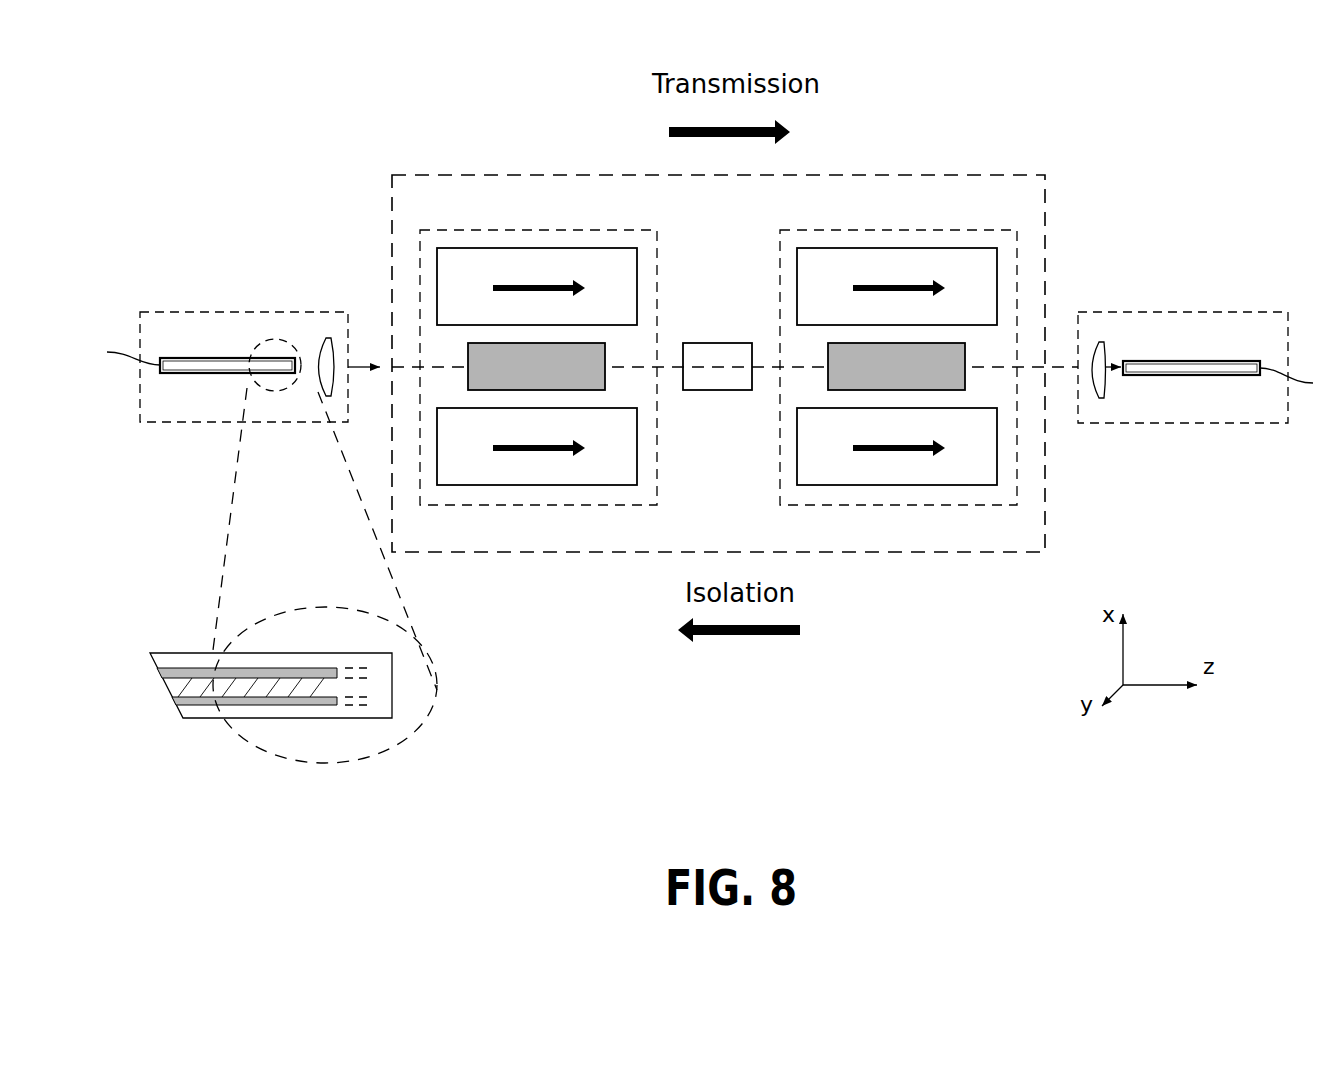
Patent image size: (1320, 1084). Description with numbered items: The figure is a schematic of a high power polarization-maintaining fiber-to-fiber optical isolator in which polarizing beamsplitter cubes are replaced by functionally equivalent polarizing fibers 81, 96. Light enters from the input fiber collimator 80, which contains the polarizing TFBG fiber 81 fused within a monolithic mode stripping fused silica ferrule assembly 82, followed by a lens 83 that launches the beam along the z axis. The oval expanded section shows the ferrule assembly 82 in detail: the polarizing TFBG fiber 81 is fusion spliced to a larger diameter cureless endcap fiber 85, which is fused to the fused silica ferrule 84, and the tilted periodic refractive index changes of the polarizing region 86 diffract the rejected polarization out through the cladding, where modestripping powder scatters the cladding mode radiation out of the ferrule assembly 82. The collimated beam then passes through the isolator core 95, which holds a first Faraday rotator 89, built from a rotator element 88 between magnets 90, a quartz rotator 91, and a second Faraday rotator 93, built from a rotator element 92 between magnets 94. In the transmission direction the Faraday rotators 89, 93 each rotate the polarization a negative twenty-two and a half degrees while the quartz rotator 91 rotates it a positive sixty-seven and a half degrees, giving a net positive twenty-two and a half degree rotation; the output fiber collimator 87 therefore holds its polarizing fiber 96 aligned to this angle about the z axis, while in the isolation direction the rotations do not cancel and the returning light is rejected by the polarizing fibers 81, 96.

The fiber collimator 80 is at (205, 306).
The polarizing TFBG fiber 81 is at (127, 368).
The monolithic mode stripping fused silica ferrule assembly 82 is at (170, 645).
The input lens 83 is at (329, 338).
The fused silica ferrule 84 is at (193, 724).
The cureless endcap fiber 85 is at (375, 686).
The fiber core 86 is at (264, 704).
The fiber collimator 87 is at (1178, 306).
The first Faraday rotator 88 is at (480, 341).
The Faraday rotator 89 is at (540, 226).
The first magnets 90 is at (614, 404).
The quartz rotator 91 is at (724, 341).
The second Faraday rotator 92 is at (853, 341).
The Faraday rotator 93 is at (898, 226).
The second magnets 94 is at (984, 404).
The isolator core 95 is at (1047, 253).
The polarizing fiber 96 is at (1310, 392).